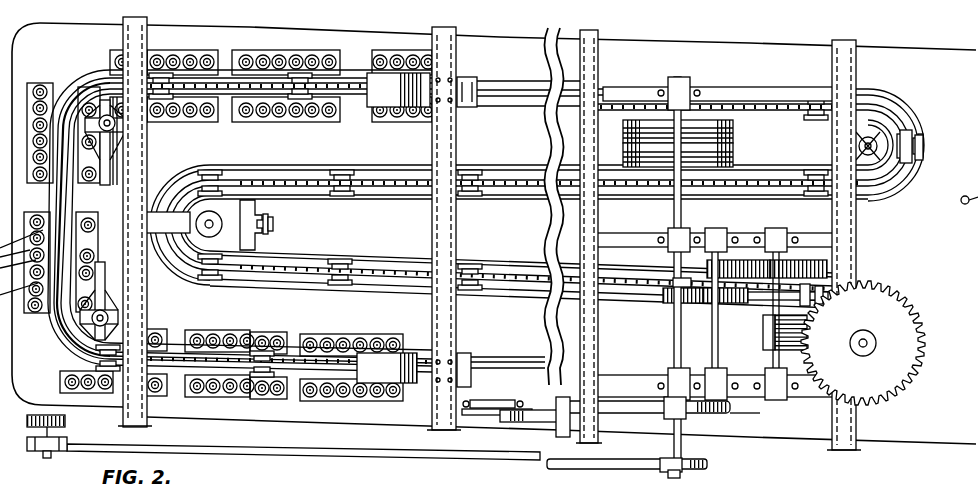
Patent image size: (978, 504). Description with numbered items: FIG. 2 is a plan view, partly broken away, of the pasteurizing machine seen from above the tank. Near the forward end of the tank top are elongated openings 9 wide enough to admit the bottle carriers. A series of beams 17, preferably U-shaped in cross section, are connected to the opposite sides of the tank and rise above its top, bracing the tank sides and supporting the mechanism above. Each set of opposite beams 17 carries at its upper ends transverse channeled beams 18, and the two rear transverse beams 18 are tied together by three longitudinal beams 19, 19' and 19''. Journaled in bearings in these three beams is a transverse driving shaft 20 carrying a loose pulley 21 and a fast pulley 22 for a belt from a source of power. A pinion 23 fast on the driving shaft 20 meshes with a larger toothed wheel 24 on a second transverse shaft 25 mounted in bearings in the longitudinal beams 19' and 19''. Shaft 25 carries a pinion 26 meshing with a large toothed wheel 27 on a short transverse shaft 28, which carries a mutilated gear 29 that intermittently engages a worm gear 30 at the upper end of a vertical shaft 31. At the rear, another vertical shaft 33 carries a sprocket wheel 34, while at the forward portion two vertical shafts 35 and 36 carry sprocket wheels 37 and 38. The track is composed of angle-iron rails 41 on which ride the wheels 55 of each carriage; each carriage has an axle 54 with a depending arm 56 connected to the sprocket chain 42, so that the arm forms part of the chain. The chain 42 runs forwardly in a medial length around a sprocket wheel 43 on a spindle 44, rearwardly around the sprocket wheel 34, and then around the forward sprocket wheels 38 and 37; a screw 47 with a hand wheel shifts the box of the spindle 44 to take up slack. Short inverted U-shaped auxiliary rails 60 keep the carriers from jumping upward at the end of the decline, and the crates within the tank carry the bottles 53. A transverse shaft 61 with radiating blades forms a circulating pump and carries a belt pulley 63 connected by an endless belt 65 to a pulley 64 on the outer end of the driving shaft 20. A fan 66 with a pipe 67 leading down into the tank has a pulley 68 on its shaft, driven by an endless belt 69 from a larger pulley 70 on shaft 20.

The elongated openings 9 is at (357, 118).
The beams 17 is at (147, 30).
The transverse channeled beams 18 is at (138, 172).
The longitudinal beam 19 is at (724, 82).
The longitudinal beam 19' is at (720, 229).
The longitudinal beam 19'' is at (720, 376).
The transverse driving shaft 20 is at (675, 218).
The loose pulley 21 is at (735, 132).
The fast pulley 22 is at (735, 156).
The pinion 23 is at (668, 304).
The larger toothed wheel 24 is at (716, 304).
The second transverse shaft 25 is at (699, 311).
The pinion 26 is at (705, 268).
The large toothed wheel 27 is at (829, 271).
The short transverse shaft 28 is at (763, 322).
The mutilated gear 29 is at (777, 311).
The worm gear 30 is at (905, 377).
The vertical shaft 31 is at (866, 341).
The vertical shaft 33 is at (905, 180).
The sprocket wheel 34 is at (912, 176).
The vertical shaft 35 is at (108, 318).
The vertical shaft 36 is at (127, 126).
The sprocket wheel 37 is at (100, 285).
The sprocket wheel 38 is at (108, 163).
The rails 41 is at (95, 69).
The sprocket chain 42 is at (63, 201).
The sprocket wheel 43 is at (257, 236).
The stud or spindle 44 is at (262, 216).
The screw 47 is at (275, 224).
The bottles 53 is at (282, 57).
The axle 54 is at (306, 100).
The wheels 55 is at (308, 100).
The arm 56 is at (294, 95).
The auxiliary inverted U-shaped rails 60 is at (372, 85).
The shaft 61 is at (49, 458).
The belt pulley 63 is at (30, 450).
The pulley 64 is at (700, 467).
The endless belt 65 is at (535, 462).
The fan 66 is at (528, 423).
The pipe 67 is at (560, 430).
The pulley 68 is at (492, 386).
The endless belt 69 is at (608, 404).
The larger pulley 70 is at (728, 416).